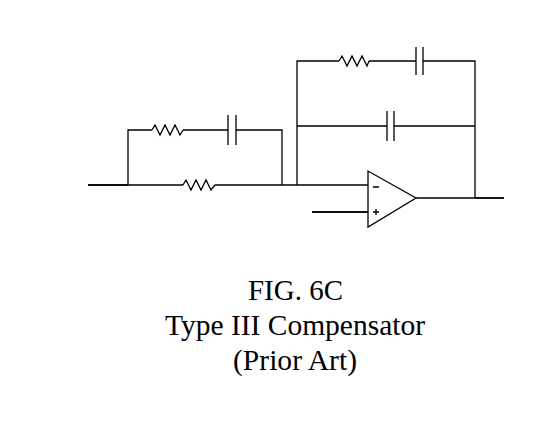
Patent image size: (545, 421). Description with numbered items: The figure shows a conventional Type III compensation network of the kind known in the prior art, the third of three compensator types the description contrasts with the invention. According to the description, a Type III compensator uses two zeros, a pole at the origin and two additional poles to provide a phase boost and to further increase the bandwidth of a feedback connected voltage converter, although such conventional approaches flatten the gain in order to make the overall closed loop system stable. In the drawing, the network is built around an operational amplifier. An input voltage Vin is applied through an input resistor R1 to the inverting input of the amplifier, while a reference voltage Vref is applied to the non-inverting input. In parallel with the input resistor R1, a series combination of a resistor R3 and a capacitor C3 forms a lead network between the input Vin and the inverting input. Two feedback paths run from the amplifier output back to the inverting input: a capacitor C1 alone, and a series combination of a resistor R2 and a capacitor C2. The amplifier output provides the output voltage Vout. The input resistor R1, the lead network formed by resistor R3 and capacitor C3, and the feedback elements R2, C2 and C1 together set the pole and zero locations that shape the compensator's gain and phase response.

The input resistor R1 is at (199, 175).
The feedback resistor R2 is at (354, 51).
The lead network resistor R3 is at (167, 120).
The feedback capacitor C1 is at (402, 125).
The feedback capacitor C2 is at (431, 55).
The lead network capacitor C3 is at (244, 125).
The input voltage terminal Vin is at (97, 185).
The reference voltage input Vref is at (324, 214).
The output voltage terminal Vout is at (504, 198).